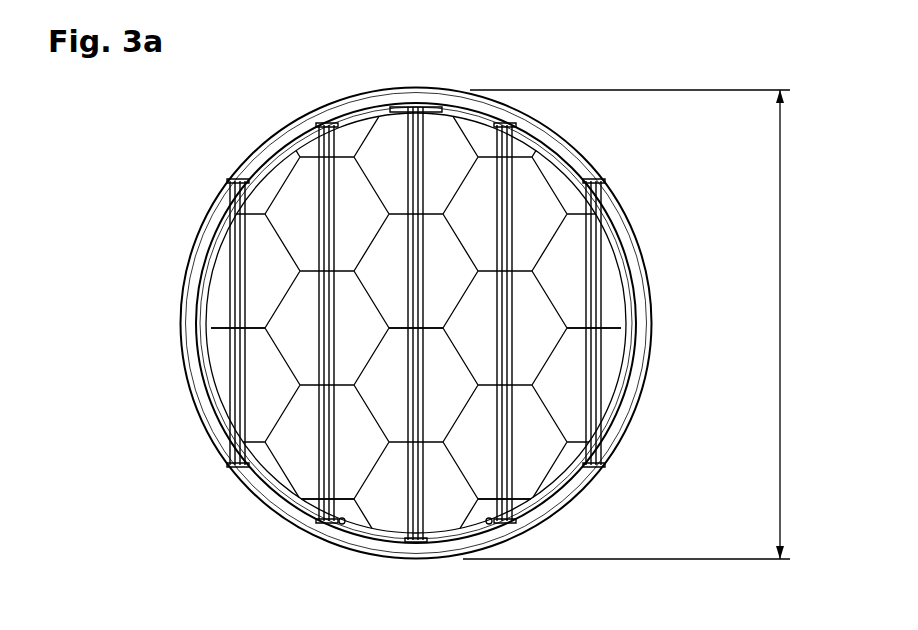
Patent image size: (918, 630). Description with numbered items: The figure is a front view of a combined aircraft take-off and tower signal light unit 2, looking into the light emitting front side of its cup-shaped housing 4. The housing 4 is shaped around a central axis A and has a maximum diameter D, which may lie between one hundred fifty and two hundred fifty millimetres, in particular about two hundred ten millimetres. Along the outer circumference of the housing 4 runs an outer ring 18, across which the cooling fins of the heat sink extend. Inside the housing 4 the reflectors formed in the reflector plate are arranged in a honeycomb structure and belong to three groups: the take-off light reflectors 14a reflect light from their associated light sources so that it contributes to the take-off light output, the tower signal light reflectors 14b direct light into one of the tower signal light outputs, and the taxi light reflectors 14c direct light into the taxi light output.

The combined aircraft take-off and tower signal light unit 2 is at (126, 146).
The cup-shaped housing 4 is at (647, 199).
The take-off light reflectors 14a is at (389, 142).
The tower signal light reflectors 14b is at (217, 258).
The taxi light reflectors 14c is at (260, 410).
The outer ring 18 is at (192, 300).
The axis A is at (425, 325).
The maximum diameter D is at (635, 324).